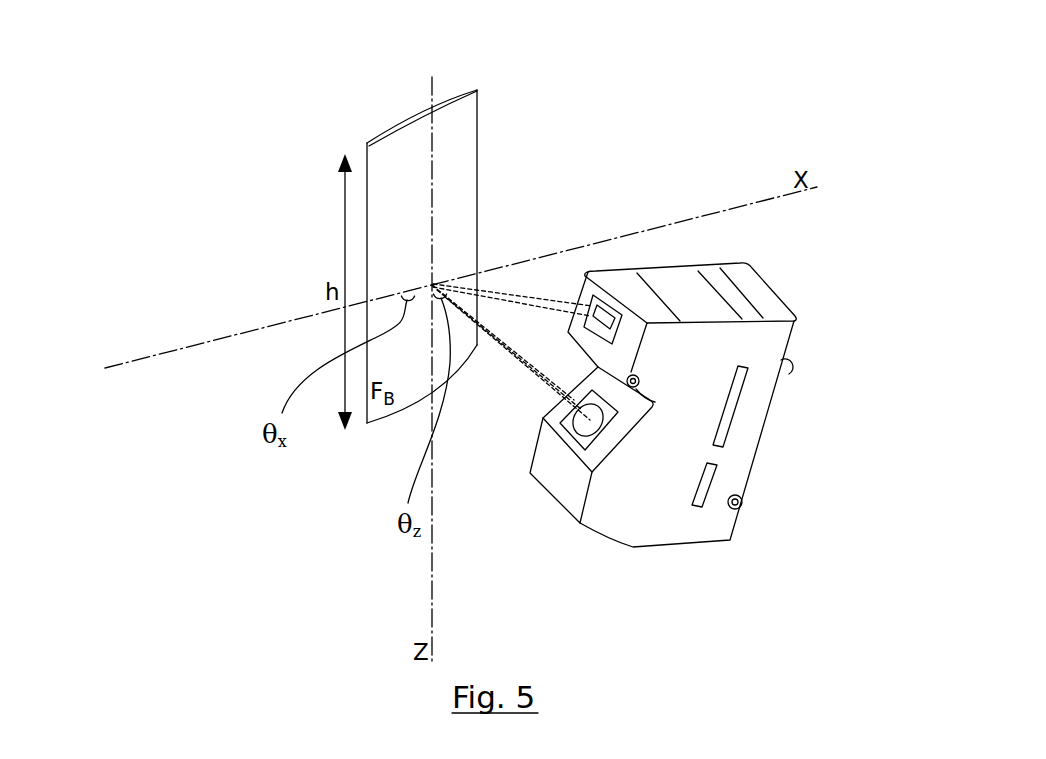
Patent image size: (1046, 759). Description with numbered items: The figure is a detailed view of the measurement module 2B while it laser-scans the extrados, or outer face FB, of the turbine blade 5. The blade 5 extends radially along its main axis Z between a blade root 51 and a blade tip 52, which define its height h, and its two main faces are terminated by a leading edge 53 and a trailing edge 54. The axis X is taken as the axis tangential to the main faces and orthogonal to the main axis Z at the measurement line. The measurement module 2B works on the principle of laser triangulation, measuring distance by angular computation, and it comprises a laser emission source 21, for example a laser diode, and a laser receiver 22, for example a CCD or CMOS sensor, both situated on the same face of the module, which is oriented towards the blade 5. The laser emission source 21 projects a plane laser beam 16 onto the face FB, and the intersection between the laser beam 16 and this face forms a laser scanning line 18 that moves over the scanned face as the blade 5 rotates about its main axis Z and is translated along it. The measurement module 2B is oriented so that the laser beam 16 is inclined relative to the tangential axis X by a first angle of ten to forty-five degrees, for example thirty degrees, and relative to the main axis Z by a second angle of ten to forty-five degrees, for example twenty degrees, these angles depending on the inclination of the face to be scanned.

The blade 5 is at (333, 111).
The blade root 51 is at (372, 424).
The blade tip 52 is at (450, 100).
The leading edge 53 is at (367, 233).
The trailing edge 54 is at (477, 192).
The laser scanning line 18 is at (435, 282).
The laser beam 16 is at (502, 348).
The laser emission source 21 is at (597, 437).
The laser receiver 22 is at (600, 272).
The measurement module 2B is at (706, 367).